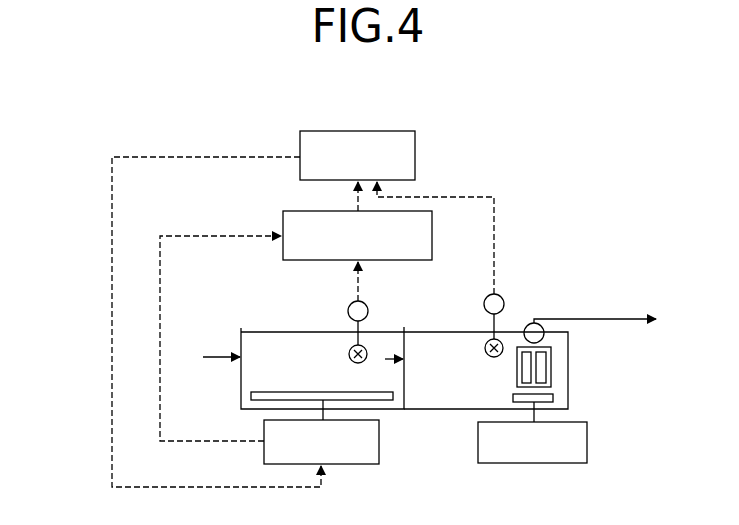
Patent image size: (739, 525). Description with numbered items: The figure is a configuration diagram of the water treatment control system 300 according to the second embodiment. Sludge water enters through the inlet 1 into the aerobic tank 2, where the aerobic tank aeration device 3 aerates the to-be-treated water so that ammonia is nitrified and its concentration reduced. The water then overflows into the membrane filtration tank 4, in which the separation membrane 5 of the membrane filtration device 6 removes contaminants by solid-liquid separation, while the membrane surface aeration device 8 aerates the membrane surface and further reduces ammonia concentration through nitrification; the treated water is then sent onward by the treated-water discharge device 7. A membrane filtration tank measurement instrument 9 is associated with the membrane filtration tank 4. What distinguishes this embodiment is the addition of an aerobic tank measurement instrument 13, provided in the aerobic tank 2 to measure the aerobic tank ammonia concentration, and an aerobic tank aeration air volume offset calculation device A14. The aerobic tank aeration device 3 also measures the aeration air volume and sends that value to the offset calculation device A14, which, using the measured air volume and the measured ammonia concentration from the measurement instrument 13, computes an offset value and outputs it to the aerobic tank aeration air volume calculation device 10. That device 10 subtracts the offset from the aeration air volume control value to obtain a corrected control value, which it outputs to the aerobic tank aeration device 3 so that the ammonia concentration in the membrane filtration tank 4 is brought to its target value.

The water treatment control system 300 is at (110, 122).
The aerobic tank aeration air volume calculation device 10 is at (330, 131).
The aerobic tank aeration air volume offset calculation device A14 is at (283, 214).
The aerobic tank measurement instrument 13 is at (348, 306).
The membrane filtration tank measurement instrument 9 is at (484, 300).
The aerobic tank 2 is at (298, 332).
The membrane filtration tank 4 is at (448, 332).
The inlet 1 is at (238, 360).
The treated-water discharge device 7 is at (540, 318).
The membrane filtration device 6 is at (517, 386).
The separation membrane 5 is at (541, 378).
The membrane surface aeration device 8 is at (510, 463).
The aerobic tank aeration device 3 is at (264, 440).